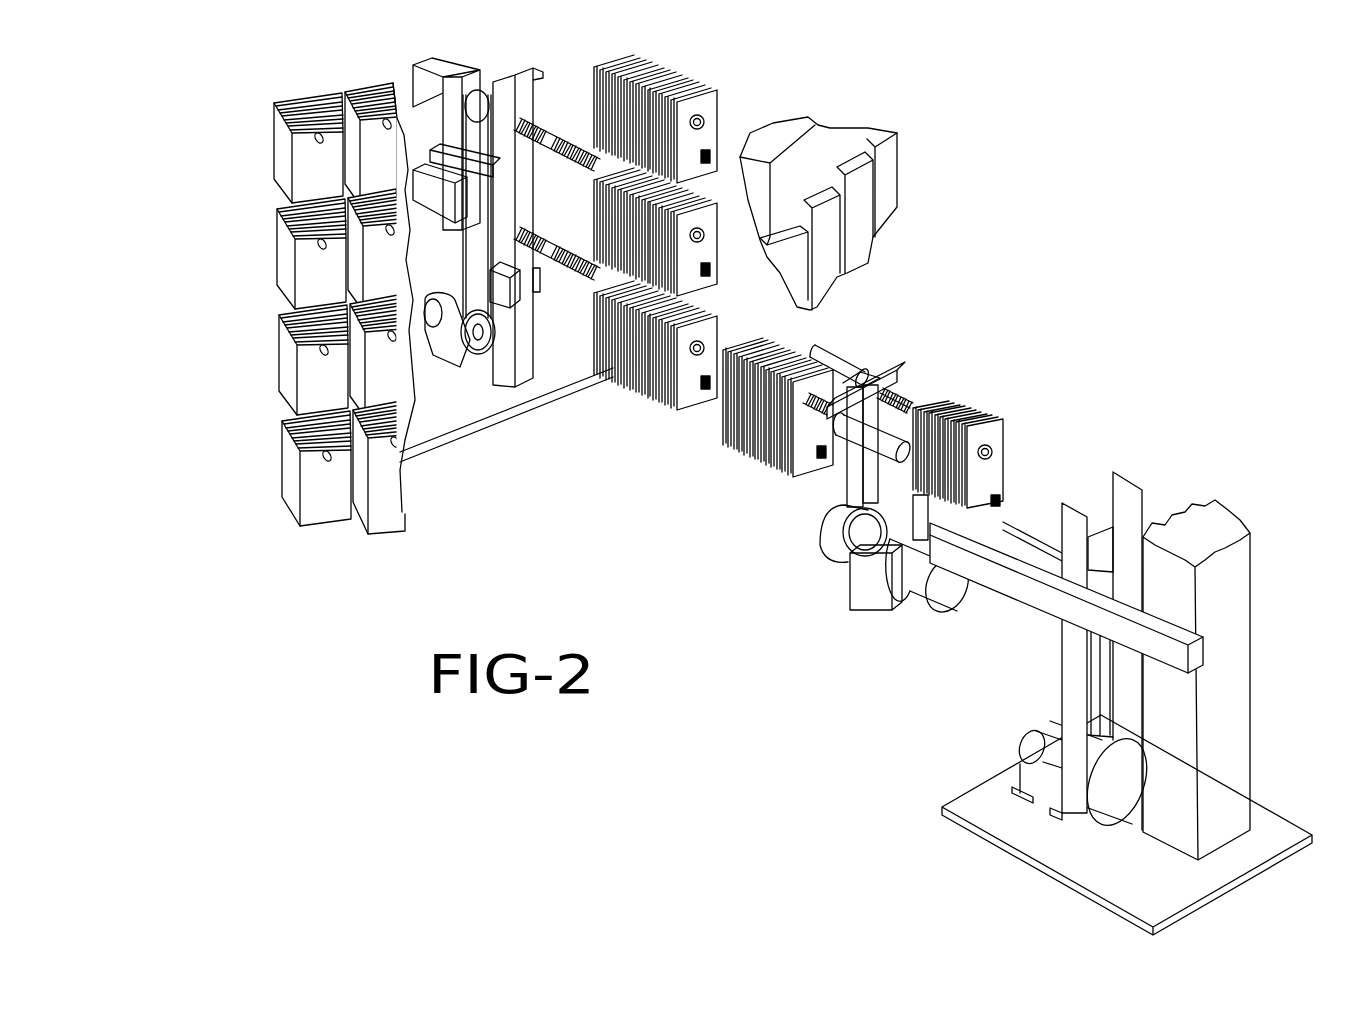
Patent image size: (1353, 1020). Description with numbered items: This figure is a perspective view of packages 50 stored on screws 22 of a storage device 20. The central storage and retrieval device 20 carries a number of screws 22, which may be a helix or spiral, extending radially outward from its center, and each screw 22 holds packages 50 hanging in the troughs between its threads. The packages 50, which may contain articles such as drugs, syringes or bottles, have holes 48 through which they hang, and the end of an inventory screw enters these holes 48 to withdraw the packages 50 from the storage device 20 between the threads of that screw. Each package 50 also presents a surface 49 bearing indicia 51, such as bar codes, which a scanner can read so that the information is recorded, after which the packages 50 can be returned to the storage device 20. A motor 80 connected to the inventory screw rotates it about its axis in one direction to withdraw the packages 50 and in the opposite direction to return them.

The storage device 20 is at (318, 296).
The screws 22 is at (580, 152).
The holes 48 is at (327, 452).
The surface 49 is at (802, 430).
The packages 50 is at (826, 299).
The indicia 51 is at (1003, 498).
The motor 80 is at (917, 587).